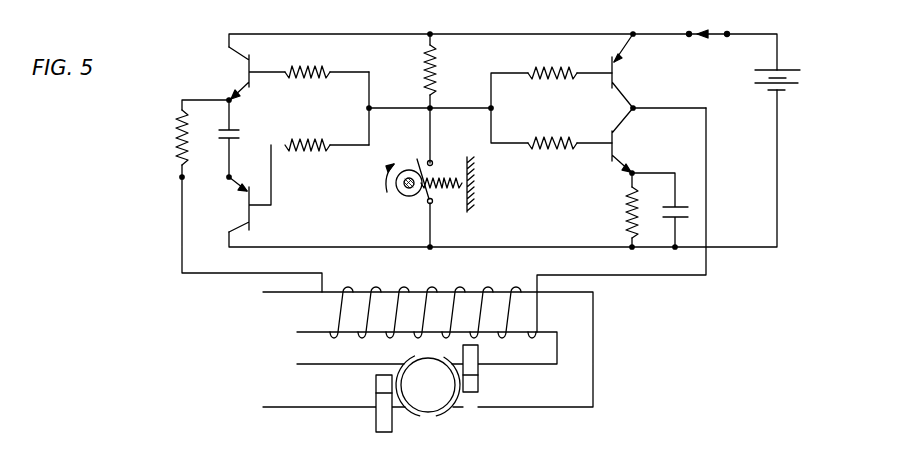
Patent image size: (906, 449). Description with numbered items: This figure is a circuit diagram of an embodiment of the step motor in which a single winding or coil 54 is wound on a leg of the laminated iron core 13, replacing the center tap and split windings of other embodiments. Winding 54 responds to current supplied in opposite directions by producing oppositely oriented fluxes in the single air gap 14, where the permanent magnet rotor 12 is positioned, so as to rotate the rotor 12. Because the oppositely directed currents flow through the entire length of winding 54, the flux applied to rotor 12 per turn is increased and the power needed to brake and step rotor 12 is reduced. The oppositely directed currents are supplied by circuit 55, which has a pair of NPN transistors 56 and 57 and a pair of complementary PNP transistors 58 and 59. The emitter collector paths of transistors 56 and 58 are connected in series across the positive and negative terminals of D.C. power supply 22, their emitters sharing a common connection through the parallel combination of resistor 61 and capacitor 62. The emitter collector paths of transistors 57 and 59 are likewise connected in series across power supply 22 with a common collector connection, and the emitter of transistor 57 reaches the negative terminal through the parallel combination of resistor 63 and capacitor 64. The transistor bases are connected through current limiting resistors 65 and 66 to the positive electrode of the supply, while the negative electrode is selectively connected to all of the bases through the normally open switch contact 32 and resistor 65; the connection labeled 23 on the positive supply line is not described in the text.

The circuit 55 is at (210, 60).
The NPN transistor 56 is at (252, 62).
The PNP transistor 58 is at (255, 218).
The PNP transistor 59 is at (611, 85).
The NPN transistor 57 is at (611, 158).
The current limiting resistor 65 is at (326, 68).
The current limiting resistor 66 is at (424, 78).
The resistor 61 is at (176, 136).
The capacitor 62 is at (236, 132).
The resistor 63 is at (624, 219).
The capacitor 64 is at (680, 204).
The switch contact 32 is at (418, 203).
The D.C. power supply 22 is at (793, 85).
The switch 23 is at (716, 34).
The laminated iron core 13 is at (262, 352).
The winding 54 is at (463, 288).
The air gap 14 is at (446, 412).
The permanent magnet rotor 12 is at (432, 410).